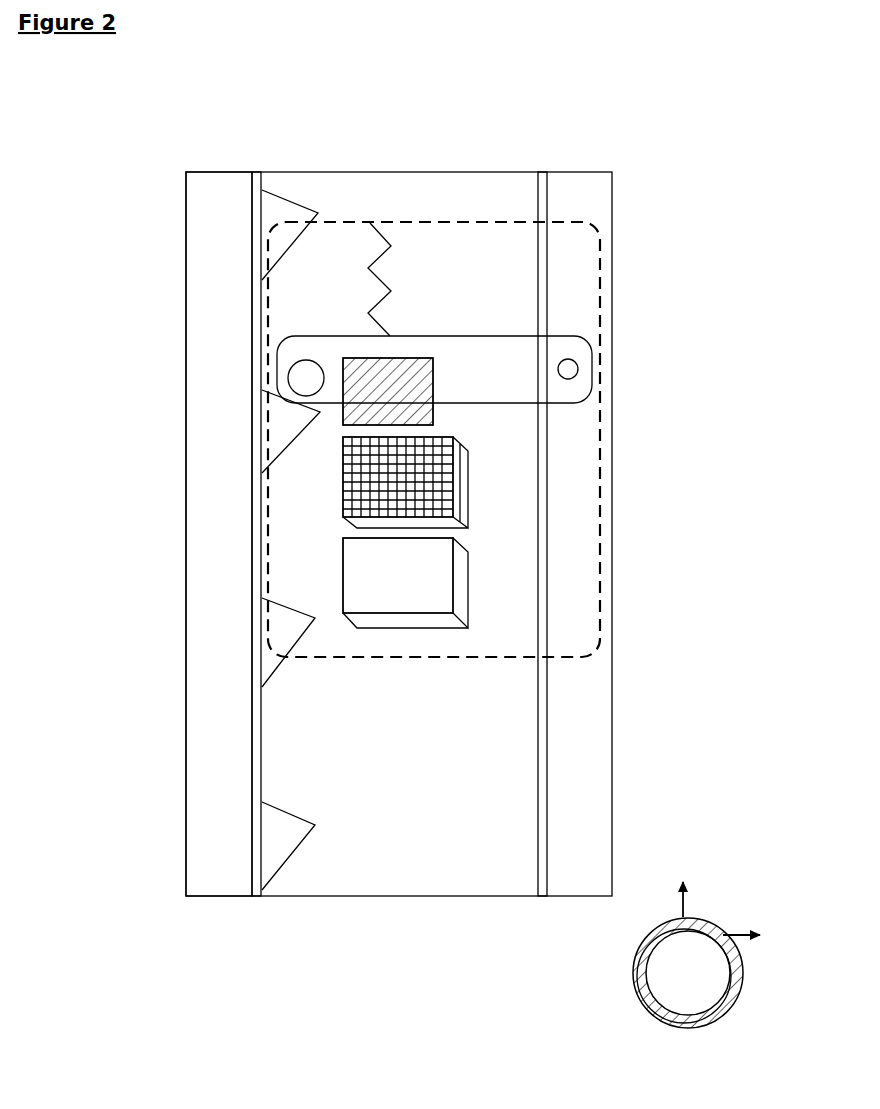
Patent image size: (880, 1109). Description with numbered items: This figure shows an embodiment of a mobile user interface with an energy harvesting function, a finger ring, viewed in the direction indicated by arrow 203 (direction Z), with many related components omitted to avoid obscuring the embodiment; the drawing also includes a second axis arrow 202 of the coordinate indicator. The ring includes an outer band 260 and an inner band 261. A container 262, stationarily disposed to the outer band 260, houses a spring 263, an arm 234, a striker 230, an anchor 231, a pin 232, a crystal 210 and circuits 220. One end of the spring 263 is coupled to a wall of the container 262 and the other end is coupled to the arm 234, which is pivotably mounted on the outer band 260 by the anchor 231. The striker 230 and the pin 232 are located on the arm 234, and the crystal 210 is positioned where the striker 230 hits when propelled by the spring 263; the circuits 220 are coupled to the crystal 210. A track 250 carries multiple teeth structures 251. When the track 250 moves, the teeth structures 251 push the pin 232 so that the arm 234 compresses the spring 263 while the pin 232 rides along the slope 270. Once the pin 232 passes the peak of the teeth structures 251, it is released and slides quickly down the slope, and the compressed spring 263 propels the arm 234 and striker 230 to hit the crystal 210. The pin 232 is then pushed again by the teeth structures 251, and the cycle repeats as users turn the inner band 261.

The outer band 260 is at (232, 202).
The slope 270 is at (293, 197).
The inner band 261 is at (460, 172).
The spring 263 is at (385, 282).
The container 262 is at (593, 230).
The arm 234 is at (520, 373).
The anchor 231 is at (568, 369).
The pin 232 is at (306, 380).
The striker 230 is at (358, 407).
The crystal 210 is at (442, 502).
The circuits 220 is at (442, 567).
The track 250 is at (357, 482).
The teeth structures 251 is at (317, 627).
The arrow indicating viewing direction 203 is at (671, 878).
The Y axis 202 is at (768, 961).